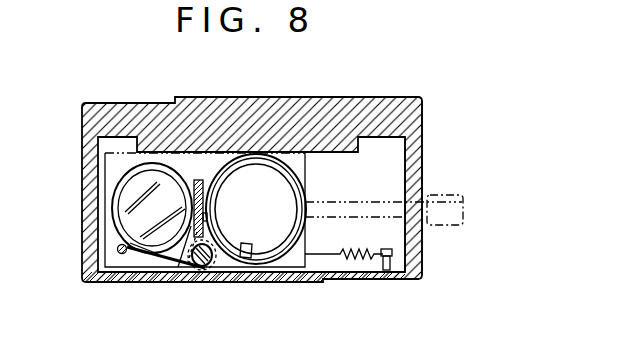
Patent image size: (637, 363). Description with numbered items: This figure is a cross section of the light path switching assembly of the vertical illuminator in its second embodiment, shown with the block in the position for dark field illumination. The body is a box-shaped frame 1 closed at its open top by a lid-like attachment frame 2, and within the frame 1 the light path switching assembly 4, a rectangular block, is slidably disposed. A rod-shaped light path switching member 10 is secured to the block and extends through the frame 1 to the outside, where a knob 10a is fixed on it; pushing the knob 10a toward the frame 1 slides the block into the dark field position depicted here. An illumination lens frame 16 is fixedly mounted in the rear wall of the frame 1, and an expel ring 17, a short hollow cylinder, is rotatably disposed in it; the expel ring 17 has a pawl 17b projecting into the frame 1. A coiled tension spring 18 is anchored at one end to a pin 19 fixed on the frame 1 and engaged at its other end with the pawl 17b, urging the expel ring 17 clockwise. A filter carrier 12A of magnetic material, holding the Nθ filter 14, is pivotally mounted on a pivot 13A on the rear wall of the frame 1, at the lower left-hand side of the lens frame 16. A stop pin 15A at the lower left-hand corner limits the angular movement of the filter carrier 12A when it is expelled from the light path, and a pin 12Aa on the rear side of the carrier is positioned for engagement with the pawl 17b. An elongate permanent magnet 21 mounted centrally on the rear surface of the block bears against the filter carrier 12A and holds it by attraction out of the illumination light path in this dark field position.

The frame 1 is at (411, 170).
The attachment frame 2 is at (400, 114).
The light path switching assembly 4 is at (106, 160).
The light path switching member 10 is at (352, 202).
The knob 10a is at (453, 225).
The filter carrier 12A is at (180, 268).
The pin 12Aa is at (188, 286).
The pivot 13A is at (207, 271).
The Nθ filter 14 is at (125, 200).
The stop pin 15A is at (118, 249).
The illumination lens frame 16 is at (294, 178).
The expel ring 17 is at (295, 206).
The pawl 17b is at (246, 243).
The coiled tension spring 18 is at (356, 259).
The pin 19 is at (385, 249).
The permanent magnet 21 is at (197, 181).